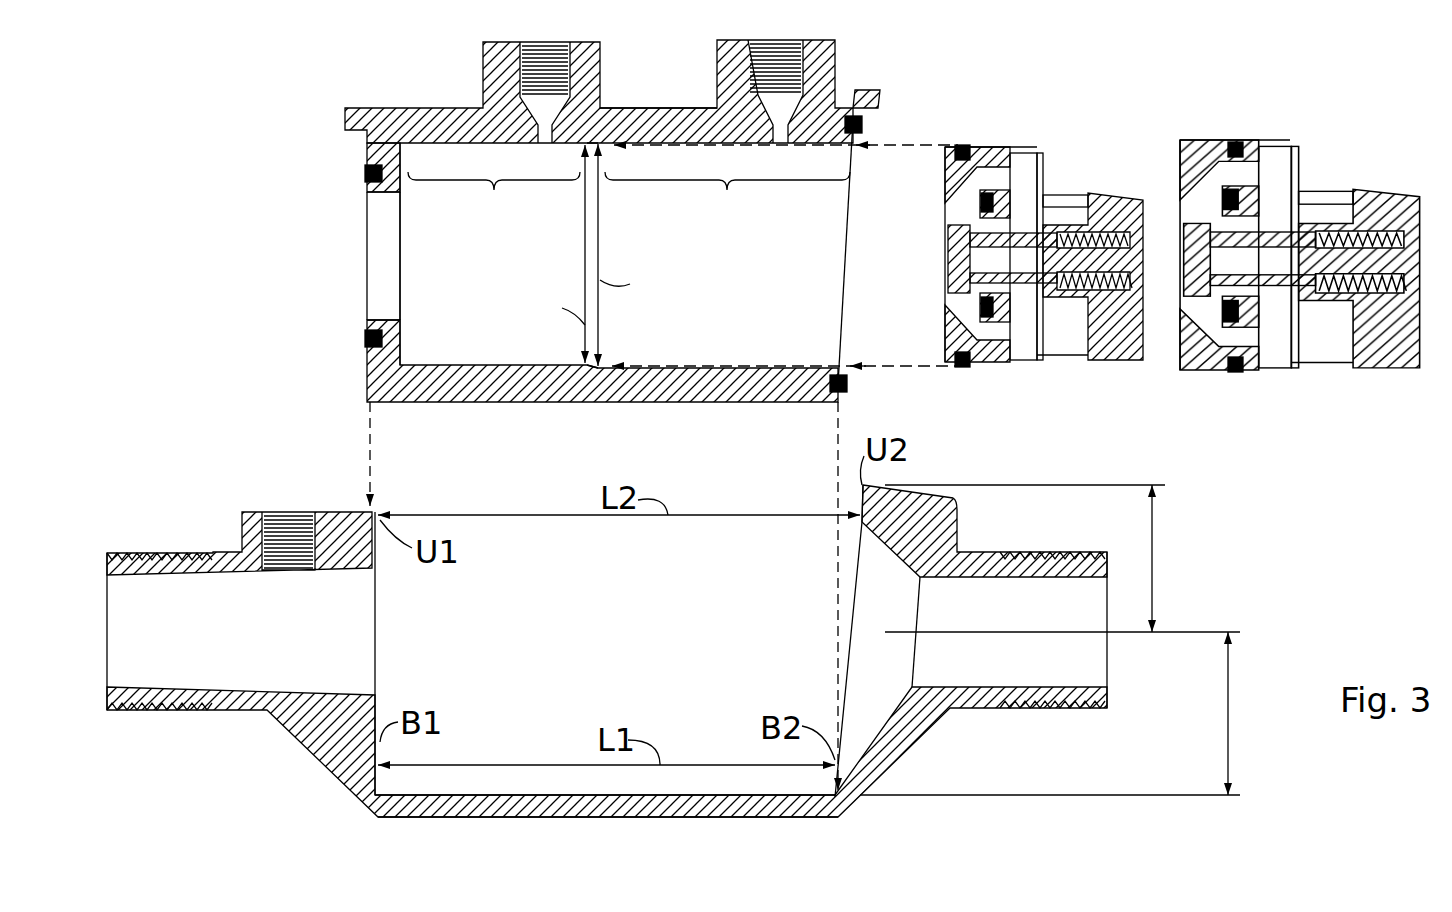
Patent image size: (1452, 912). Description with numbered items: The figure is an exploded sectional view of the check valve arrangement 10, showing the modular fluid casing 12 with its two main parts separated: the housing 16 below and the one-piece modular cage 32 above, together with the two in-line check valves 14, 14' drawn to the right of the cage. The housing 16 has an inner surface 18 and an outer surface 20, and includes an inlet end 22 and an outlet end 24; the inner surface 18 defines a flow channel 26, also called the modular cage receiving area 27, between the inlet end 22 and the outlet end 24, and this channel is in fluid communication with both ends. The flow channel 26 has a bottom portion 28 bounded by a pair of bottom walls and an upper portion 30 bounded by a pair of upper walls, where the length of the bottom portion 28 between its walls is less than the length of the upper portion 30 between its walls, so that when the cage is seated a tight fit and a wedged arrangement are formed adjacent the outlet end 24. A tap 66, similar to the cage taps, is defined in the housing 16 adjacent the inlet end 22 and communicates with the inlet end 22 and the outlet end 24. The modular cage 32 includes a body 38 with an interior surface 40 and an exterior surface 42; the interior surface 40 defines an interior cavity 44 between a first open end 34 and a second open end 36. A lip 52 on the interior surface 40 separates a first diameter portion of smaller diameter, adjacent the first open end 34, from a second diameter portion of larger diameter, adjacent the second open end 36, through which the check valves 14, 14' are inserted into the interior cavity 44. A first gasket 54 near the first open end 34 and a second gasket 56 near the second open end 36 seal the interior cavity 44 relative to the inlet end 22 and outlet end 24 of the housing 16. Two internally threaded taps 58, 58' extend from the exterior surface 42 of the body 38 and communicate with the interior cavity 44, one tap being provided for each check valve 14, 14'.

The check valve arrangement 10 is at (1082, 90).
The modular fluid casing 12 is at (311, 236).
The in-line check valve 14 is at (1044, 218).
The in-line check valve 14' is at (1295, 215).
The housing 16 is at (326, 766).
The inner surface 18 is at (520, 796).
The outer surface 20 is at (716, 818).
The inlet end 22 is at (110, 552).
The outlet end 24 is at (1106, 552).
The flow channel 26 is at (642, 642).
The modular cage receiving area 27 is at (600, 672).
The bottom portion 28 is at (1232, 760).
The upper portion 30 is at (1158, 542).
The modular cage 32 is at (412, 106).
The first open end 34 is at (368, 346).
The second open end 36 is at (848, 390).
The body 38 is at (662, 108).
The interior surface 40 is at (500, 365).
The exterior surface 42 is at (482, 402).
The interior cavity 44 is at (662, 259).
The lip 52 is at (598, 140).
The first gasket 54 is at (366, 172).
The second gasket 56 is at (864, 124).
The tap 58 is at (495, 60).
The tap 58' is at (728, 59).
The tap 66 is at (280, 512).